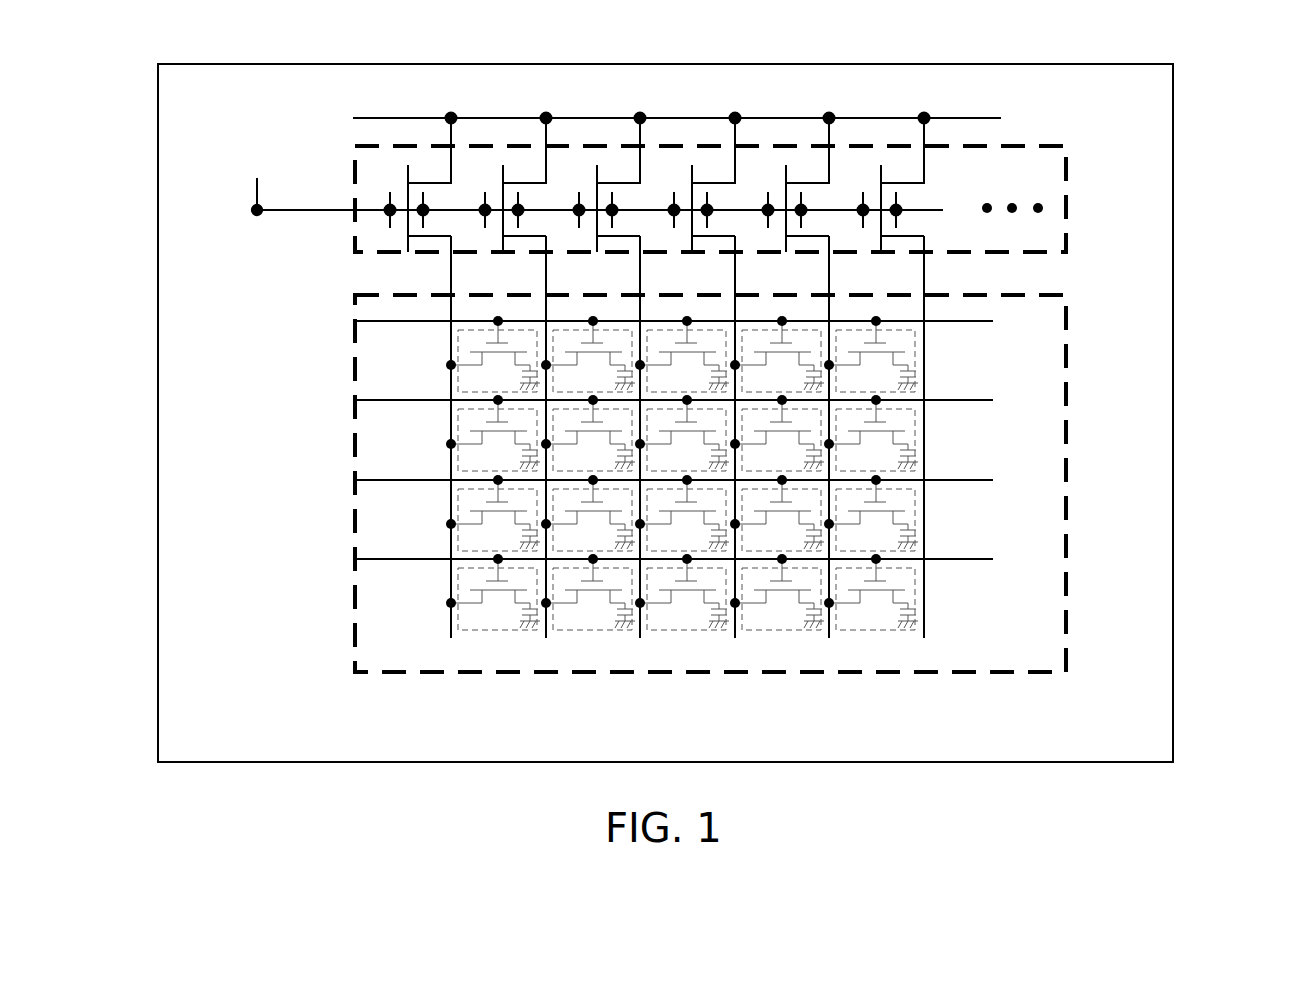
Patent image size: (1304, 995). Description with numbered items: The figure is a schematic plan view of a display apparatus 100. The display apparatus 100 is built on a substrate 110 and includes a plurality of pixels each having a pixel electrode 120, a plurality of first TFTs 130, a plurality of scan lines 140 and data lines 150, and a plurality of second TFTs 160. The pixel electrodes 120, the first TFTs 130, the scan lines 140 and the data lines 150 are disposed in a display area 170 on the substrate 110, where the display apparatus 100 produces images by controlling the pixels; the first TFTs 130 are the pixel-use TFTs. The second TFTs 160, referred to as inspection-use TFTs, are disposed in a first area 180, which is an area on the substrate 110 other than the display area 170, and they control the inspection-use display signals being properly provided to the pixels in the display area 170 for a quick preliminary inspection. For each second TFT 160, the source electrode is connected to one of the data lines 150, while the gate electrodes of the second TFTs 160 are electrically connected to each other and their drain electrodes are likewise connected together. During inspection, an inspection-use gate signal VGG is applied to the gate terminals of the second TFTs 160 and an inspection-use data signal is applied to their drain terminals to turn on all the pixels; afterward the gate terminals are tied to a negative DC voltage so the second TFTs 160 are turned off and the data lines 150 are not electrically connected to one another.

The display apparatus 100 is at (98, 68).
The substrate 110 is at (1175, 410).
The pixel electrode 120 is at (525, 611).
The first TFT 130 is at (472, 574).
The scan line 140 is at (698, 439).
The data line 150 is at (688, 452).
The second TFT 160 is at (925, 155).
The display area 170 is at (1033, 626).
The first area 180 is at (643, 171).